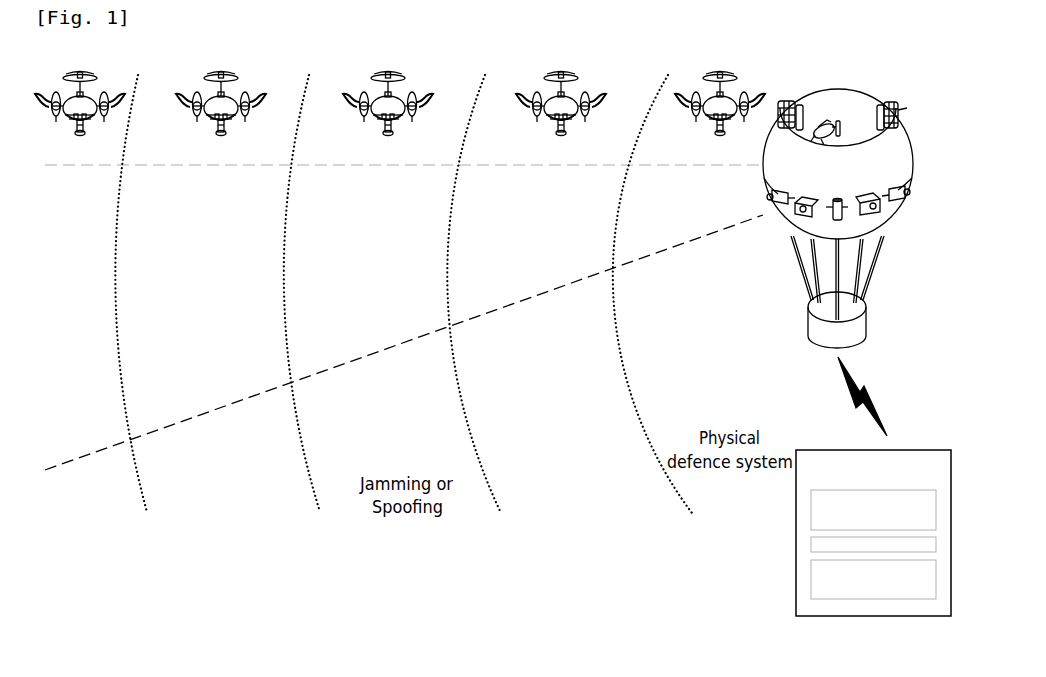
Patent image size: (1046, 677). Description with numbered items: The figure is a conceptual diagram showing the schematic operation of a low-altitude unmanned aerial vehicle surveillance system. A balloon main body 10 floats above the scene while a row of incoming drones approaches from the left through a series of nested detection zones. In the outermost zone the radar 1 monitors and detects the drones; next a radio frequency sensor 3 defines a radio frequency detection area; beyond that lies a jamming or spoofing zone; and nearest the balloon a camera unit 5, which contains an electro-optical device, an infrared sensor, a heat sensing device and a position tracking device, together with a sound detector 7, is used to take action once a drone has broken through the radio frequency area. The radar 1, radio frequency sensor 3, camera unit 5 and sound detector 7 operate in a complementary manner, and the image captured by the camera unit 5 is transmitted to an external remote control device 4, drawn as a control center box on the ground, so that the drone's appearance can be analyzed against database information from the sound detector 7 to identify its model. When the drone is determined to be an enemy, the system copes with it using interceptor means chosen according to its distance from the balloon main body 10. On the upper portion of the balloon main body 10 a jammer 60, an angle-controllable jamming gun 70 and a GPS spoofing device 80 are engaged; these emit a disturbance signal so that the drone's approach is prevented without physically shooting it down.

The radar 1 is at (98, 494).
The radio frequency sensor 3 is at (237, 494).
The camera unit 5 is at (589, 494).
The sound detector 7 is at (882, 206).
The balloon main body 10 is at (903, 152).
The jammer 60 is at (789, 100).
The jamming gun 70 is at (827, 118).
The GPS spoofing device 80 is at (891, 102).
The external remote control device 4 is at (927, 450).